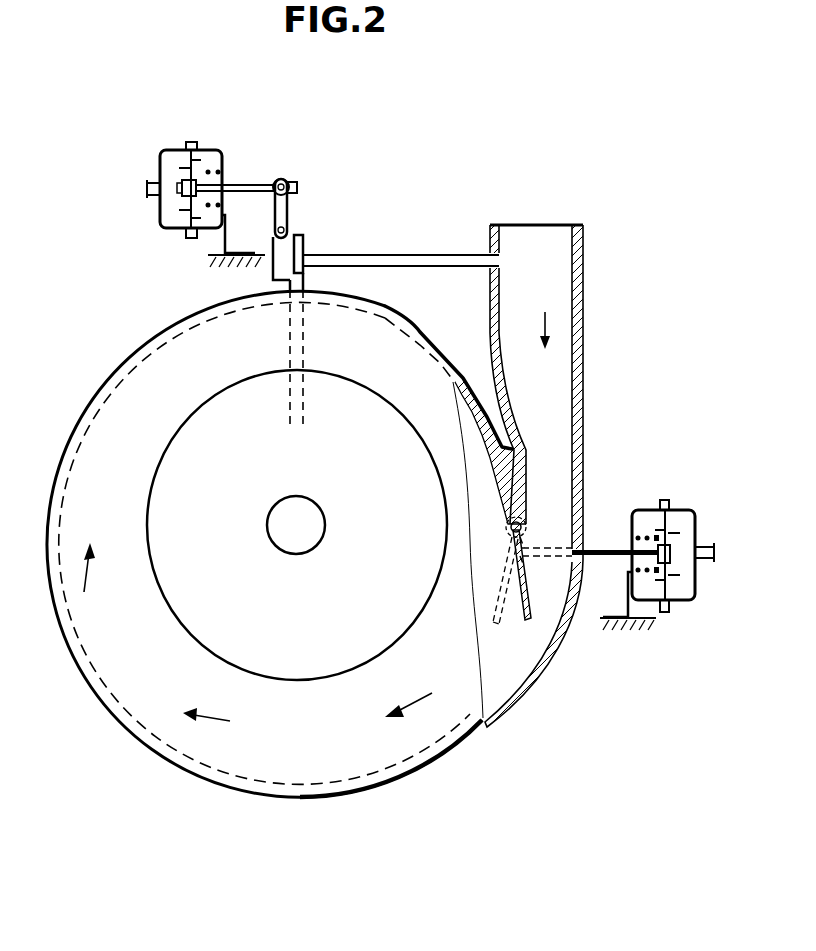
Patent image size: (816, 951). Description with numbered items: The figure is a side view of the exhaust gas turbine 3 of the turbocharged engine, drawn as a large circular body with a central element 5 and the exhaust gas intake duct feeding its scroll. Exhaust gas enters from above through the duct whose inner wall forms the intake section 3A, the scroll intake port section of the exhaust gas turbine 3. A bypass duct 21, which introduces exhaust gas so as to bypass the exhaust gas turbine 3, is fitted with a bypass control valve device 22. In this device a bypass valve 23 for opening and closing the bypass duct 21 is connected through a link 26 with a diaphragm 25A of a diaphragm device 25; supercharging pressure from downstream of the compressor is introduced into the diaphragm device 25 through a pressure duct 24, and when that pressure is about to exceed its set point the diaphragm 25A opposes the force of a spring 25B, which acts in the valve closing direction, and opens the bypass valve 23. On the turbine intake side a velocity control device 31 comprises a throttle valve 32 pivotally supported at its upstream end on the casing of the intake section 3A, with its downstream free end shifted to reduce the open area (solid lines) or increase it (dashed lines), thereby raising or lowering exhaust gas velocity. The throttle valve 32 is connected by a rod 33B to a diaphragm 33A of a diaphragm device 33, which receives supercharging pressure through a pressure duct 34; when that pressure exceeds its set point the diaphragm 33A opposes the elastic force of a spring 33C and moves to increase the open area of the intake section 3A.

The exhaust gas turbine 3 is at (94, 383).
The intake section 3A is at (565, 437).
The drum shaft 5 is at (318, 528).
The bypass duct 21 is at (412, 255).
The bypass control valve device 22 is at (178, 252).
The bypass valve 23 is at (304, 250).
The pressure duct 24 is at (149, 184).
The diaphragm device 25 is at (160, 226).
The diaphragm 25A is at (186, 160).
The spring 25B is at (206, 170).
The link 26 is at (284, 212).
The velocity control device 31 is at (669, 492).
The throttle valve 32 is at (528, 600).
The diaphragm device 33 is at (696, 592).
The diaphragm 33A is at (666, 517).
The rod 33B is at (605, 558).
The spring 33C is at (645, 534).
The pressure duct 34 is at (711, 548).